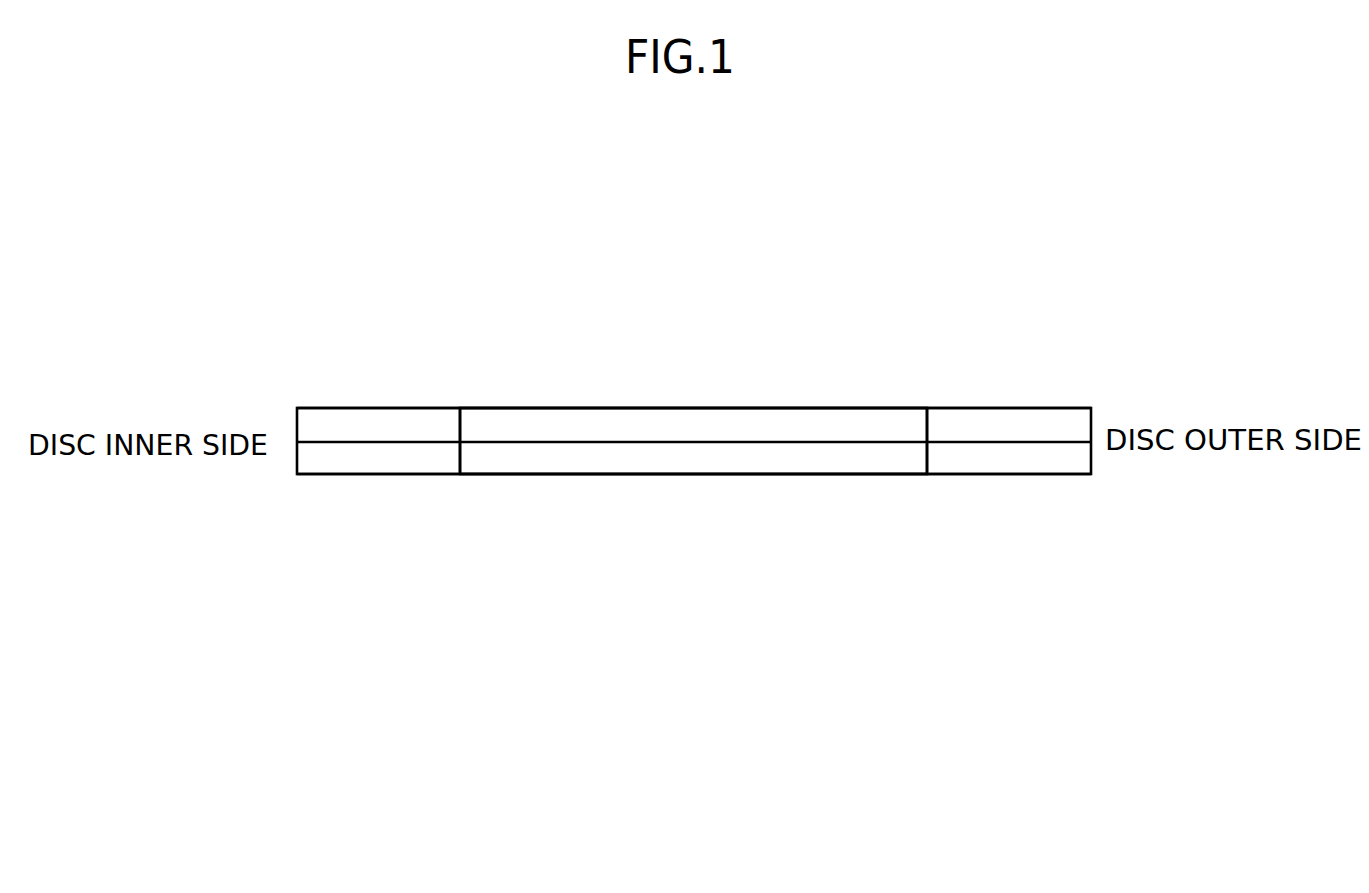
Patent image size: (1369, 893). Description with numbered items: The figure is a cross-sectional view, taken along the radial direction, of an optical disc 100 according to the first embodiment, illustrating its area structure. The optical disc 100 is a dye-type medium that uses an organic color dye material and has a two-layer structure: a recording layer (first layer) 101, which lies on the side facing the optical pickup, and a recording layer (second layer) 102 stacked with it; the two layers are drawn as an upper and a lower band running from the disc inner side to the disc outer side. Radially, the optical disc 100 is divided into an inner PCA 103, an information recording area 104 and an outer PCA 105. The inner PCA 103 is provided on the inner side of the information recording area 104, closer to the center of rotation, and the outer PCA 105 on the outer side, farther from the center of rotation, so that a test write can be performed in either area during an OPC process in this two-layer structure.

The optical disc 100 is at (519, 272).
The recording layer (first layer) 101 is at (1059, 465).
The recording layer (second layer) 102 is at (1044, 418).
The inner PCA 103 is at (380, 389).
The information recording area 104 is at (696, 387).
The outer PCA 105 is at (1006, 382).